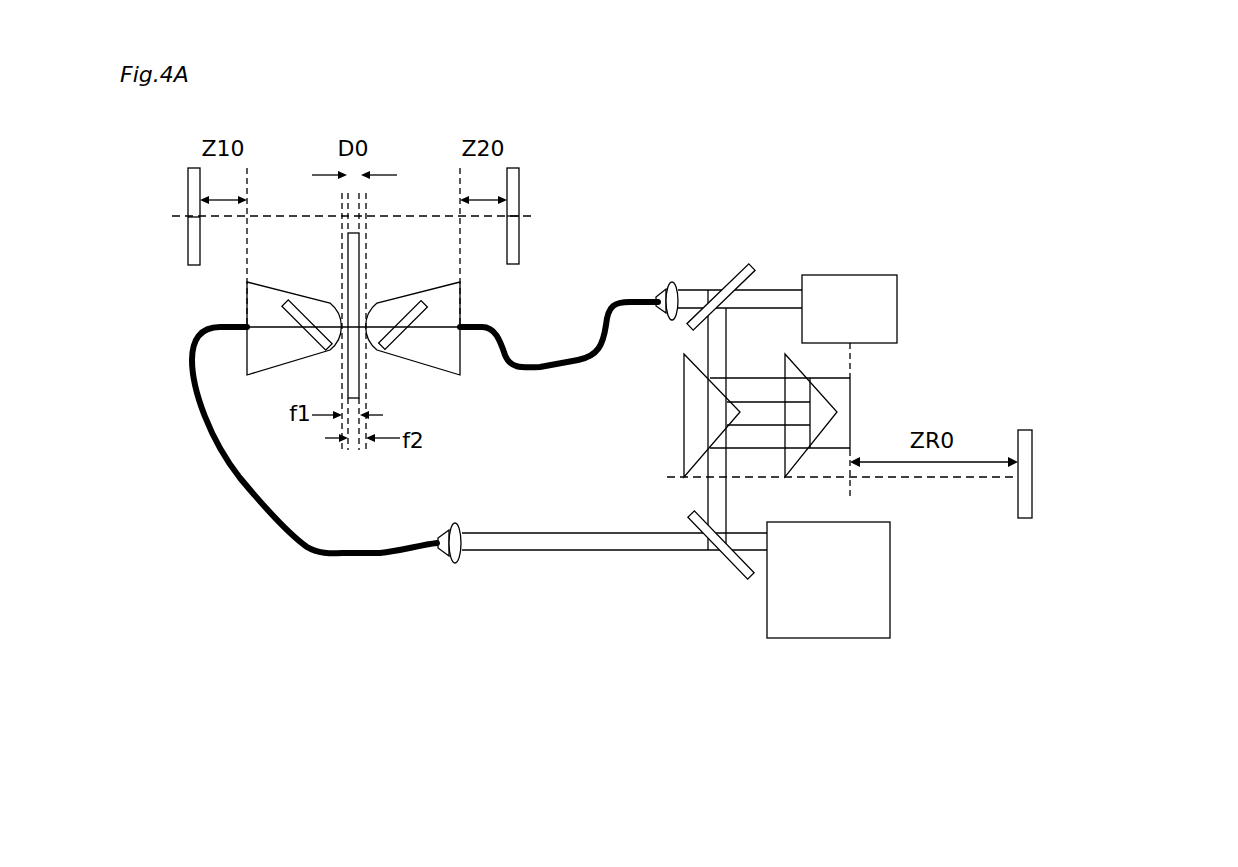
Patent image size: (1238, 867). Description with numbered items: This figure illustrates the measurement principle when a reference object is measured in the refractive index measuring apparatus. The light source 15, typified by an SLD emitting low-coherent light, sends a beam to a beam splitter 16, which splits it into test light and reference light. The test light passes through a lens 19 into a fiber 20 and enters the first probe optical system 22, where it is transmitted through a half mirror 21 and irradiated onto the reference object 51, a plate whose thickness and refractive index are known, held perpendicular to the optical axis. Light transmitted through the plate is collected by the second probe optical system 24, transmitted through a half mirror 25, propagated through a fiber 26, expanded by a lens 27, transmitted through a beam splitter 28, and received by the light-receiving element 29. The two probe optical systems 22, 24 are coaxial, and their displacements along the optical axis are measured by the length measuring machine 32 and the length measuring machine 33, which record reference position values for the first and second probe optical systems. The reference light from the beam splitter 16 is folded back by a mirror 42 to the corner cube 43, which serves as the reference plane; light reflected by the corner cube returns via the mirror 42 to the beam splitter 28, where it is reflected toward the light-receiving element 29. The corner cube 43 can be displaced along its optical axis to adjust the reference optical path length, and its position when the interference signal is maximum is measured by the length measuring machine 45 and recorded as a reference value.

The light source 15 is at (873, 625).
The beam splitter 16 is at (735, 565).
The lens 19 is at (455, 563).
The fiber 20 is at (307, 547).
The half mirror 21 is at (285, 305).
The first probe optical system 22 is at (272, 353).
The second probe optical system 24 is at (447, 363).
The half mirror 25 is at (403, 307).
The fiber 26 is at (540, 362).
The lens 27 is at (673, 283).
The beam splitter 28 is at (740, 270).
The light-receiving element 29 is at (820, 275).
The length measuring machine 32 is at (188, 188).
The length measuring machine 33 is at (515, 180).
The mirror 42 is at (690, 407).
The corner cube 43 is at (838, 410).
The length measuring machine 45 is at (1027, 430).
The reference object 51 is at (352, 235).